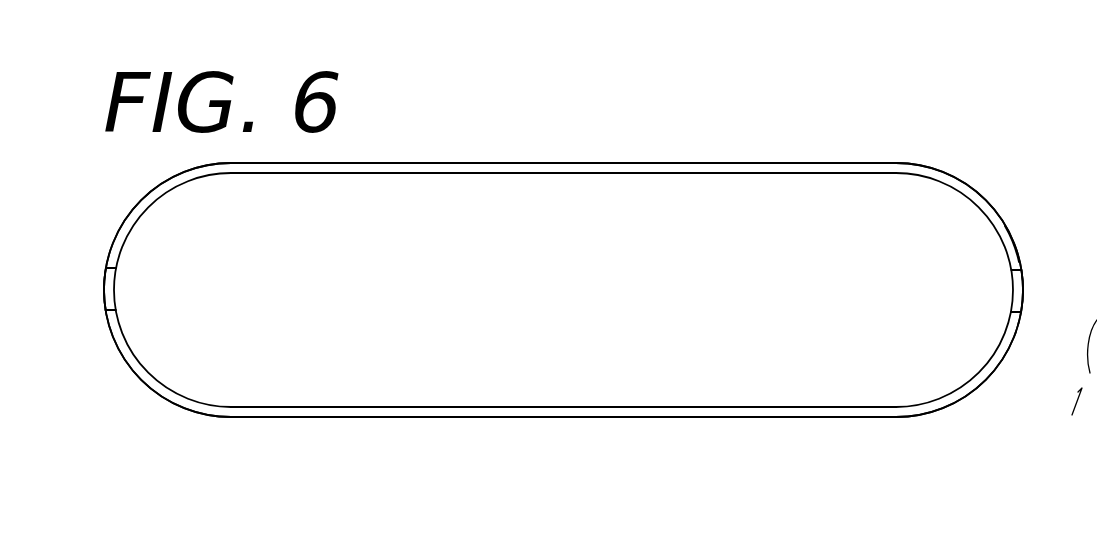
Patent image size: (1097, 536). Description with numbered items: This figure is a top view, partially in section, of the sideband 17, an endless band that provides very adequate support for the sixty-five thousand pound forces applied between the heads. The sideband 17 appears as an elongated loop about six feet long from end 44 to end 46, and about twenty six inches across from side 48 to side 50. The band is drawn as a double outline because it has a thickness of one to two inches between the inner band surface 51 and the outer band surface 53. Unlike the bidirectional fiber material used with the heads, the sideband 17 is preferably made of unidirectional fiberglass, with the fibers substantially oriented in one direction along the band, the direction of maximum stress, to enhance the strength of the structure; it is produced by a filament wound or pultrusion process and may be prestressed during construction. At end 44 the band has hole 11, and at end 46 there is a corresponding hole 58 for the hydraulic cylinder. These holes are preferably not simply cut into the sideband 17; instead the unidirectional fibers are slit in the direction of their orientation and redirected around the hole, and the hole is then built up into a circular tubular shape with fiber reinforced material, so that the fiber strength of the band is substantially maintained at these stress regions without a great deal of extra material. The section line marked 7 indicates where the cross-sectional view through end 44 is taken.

The sideband 17 is at (735, 125).
The side 48 is at (483, 163).
The side 50 is at (632, 410).
The inner band surface 51 is at (347, 407).
The outer band surface 53 is at (347, 417).
The hole 58 is at (116, 292).
The end 46 is at (105, 318).
The hole 11 is at (1011, 297).
The end 44 is at (1019, 262).
The section line 7- 7 is at (1036, 465).